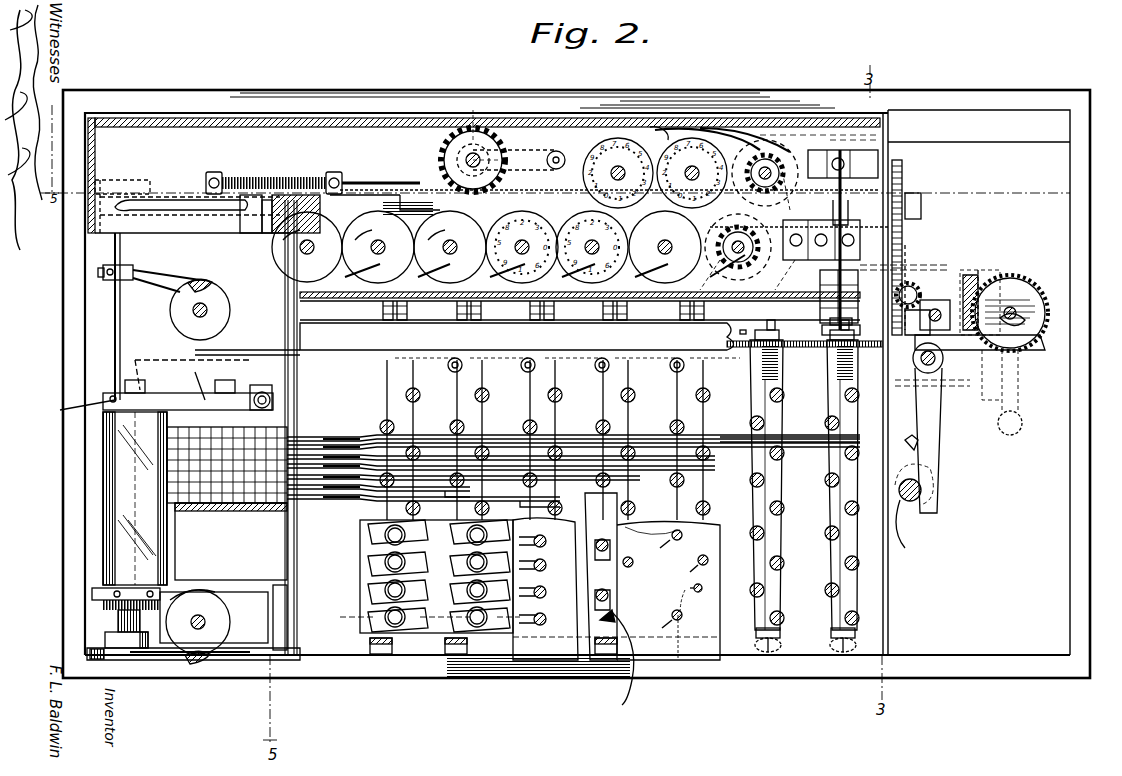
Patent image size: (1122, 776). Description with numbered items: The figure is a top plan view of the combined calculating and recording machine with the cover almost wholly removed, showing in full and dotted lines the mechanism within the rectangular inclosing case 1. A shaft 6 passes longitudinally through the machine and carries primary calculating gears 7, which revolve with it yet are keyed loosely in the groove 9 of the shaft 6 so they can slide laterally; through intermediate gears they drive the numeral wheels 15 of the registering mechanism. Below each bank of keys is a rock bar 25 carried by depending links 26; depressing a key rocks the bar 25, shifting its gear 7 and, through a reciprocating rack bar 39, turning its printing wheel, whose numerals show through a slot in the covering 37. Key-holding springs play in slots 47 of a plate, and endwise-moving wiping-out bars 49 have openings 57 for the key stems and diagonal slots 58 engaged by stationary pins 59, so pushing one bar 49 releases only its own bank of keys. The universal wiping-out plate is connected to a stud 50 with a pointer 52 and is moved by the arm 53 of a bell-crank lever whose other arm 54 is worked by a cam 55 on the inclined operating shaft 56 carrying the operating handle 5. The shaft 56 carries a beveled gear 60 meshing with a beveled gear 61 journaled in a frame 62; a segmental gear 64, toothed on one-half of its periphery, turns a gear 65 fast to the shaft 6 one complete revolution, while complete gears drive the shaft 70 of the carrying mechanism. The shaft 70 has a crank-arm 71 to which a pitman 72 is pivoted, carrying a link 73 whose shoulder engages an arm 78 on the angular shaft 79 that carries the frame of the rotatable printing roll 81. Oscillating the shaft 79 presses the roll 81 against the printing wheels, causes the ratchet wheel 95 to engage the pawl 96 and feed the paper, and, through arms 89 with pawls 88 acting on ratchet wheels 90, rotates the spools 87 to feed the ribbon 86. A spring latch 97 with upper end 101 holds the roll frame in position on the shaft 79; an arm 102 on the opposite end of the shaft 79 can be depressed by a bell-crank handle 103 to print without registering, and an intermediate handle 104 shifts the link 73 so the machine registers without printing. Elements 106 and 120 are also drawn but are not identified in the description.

The inclosing case 1 is at (1087, 548).
The operating lever 5 is at (1015, 410).
The shaft 6 is at (905, 275).
The primary calculating gears 7 is at (818, 300).
The groove 9 is at (870, 300).
The numeral wheels 15 is at (543, 210).
The bar 25 is at (752, 380).
The depending link 26 is at (782, 626).
The covering 37 is at (537, 428).
The reciprocating rack bar 39 is at (305, 440).
The slots 47 is at (668, 591).
The endwise-moving plates 49 is at (393, 648).
The rod or stud 50 is at (915, 502).
The pointer 52 is at (918, 442).
The arm of bell-crank lever 53 is at (935, 492).
The arm 54 is at (1020, 352).
The cam 55 is at (1025, 320).
The inclined operating shaft 56 is at (1016, 310).
The openings 57 is at (610, 593).
The diagonal slot 58 is at (687, 648).
The stationary pins 59 is at (652, 655).
The beveled gear 60 is at (1022, 290).
The beveled gear 61 is at (978, 290).
The frame 62 is at (992, 300).
The segmental gear 64 is at (935, 321).
The gear 65 is at (918, 290).
The shaft 70 is at (313, 217).
The crank-arm 71 is at (330, 180).
The pitman 72 is at (285, 195).
The link 73 is at (262, 184).
The arm 78 is at (178, 197).
The square or angular shaft 79 is at (112, 310).
The printing roll 81 is at (120, 492).
The ribbon 86 is at (212, 583).
The spools 87 is at (222, 325).
The pawls 88 is at (160, 280).
The arms 89 is at (150, 275).
The ratchet wheel 90 is at (205, 282).
The ratchet wheel 95 is at (69, 409).
The pawl 96 is at (178, 400).
The spring latch 97 is at (103, 605).
The upper end of latch 101 is at (92, 592).
The arm 102 is at (265, 660).
The bell-crank handle 103 is at (270, 585).
The intermediate handle 104 is at (300, 340).
The block 106 is at (262, 225).
The spring strips 120 is at (770, 150).